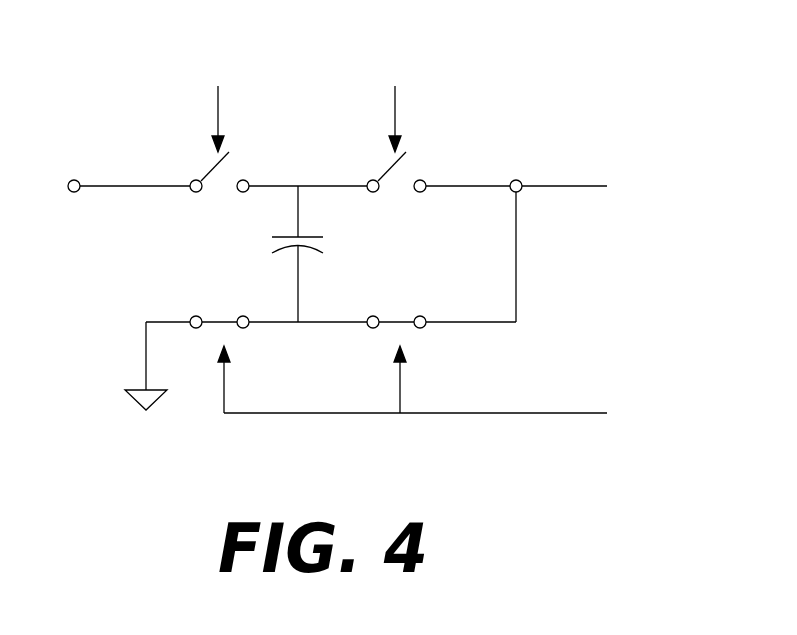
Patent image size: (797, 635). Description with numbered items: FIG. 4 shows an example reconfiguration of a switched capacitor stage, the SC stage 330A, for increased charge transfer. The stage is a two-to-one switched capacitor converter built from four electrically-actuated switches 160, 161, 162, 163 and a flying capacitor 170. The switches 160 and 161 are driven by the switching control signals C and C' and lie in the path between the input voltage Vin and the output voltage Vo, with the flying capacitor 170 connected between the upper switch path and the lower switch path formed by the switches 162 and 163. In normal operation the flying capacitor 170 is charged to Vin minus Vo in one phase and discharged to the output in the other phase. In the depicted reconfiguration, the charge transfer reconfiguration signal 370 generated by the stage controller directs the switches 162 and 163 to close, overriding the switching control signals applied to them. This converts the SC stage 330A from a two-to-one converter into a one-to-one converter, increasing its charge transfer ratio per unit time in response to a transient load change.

The SC stage 330A is at (62, 76).
The switch 160 is at (212, 168).
The switch 161 is at (389, 168).
The switch 162 is at (222, 320).
The switch 163 is at (399, 320).
The flying capacitor 170 is at (289, 248).
The charge transfer reconfiguration signal 370 is at (540, 413).